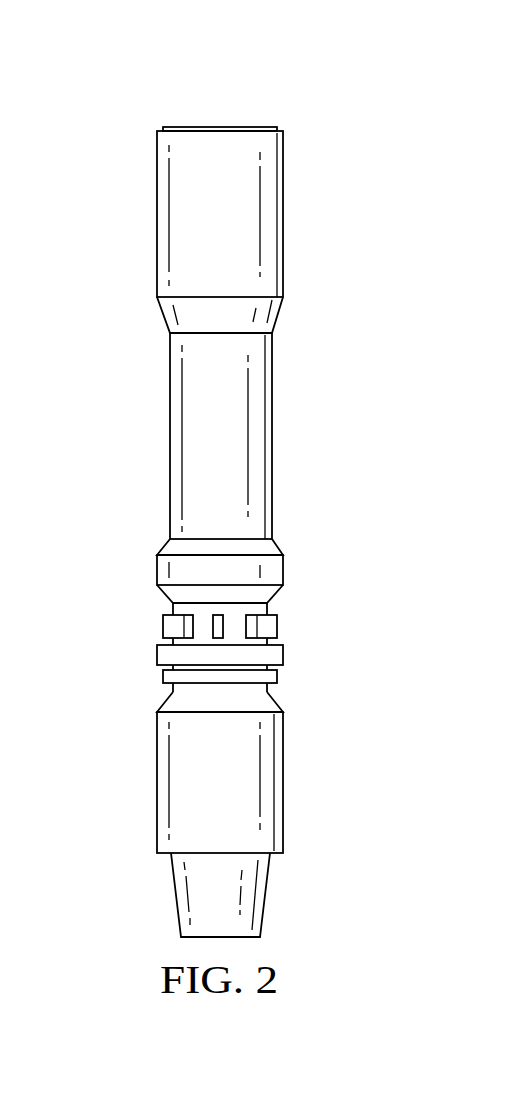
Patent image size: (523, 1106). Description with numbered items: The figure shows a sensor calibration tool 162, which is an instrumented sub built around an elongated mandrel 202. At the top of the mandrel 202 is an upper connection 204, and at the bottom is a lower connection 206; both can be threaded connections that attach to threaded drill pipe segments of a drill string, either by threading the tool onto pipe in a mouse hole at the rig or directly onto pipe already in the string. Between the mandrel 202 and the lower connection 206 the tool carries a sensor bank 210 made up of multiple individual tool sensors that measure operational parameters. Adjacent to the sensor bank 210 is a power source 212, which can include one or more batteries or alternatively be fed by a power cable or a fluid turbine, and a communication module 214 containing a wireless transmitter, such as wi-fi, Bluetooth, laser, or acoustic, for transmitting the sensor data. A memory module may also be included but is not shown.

The sensor calibration tool 162 is at (105, 101).
The mandrel 202 is at (169, 437).
The upper connection 204 is at (218, 125).
The lower connection 206 is at (173, 893).
The sensor bank 210 is at (277, 627).
The power source 212 is at (157, 654).
The communication module 214 is at (277, 677).